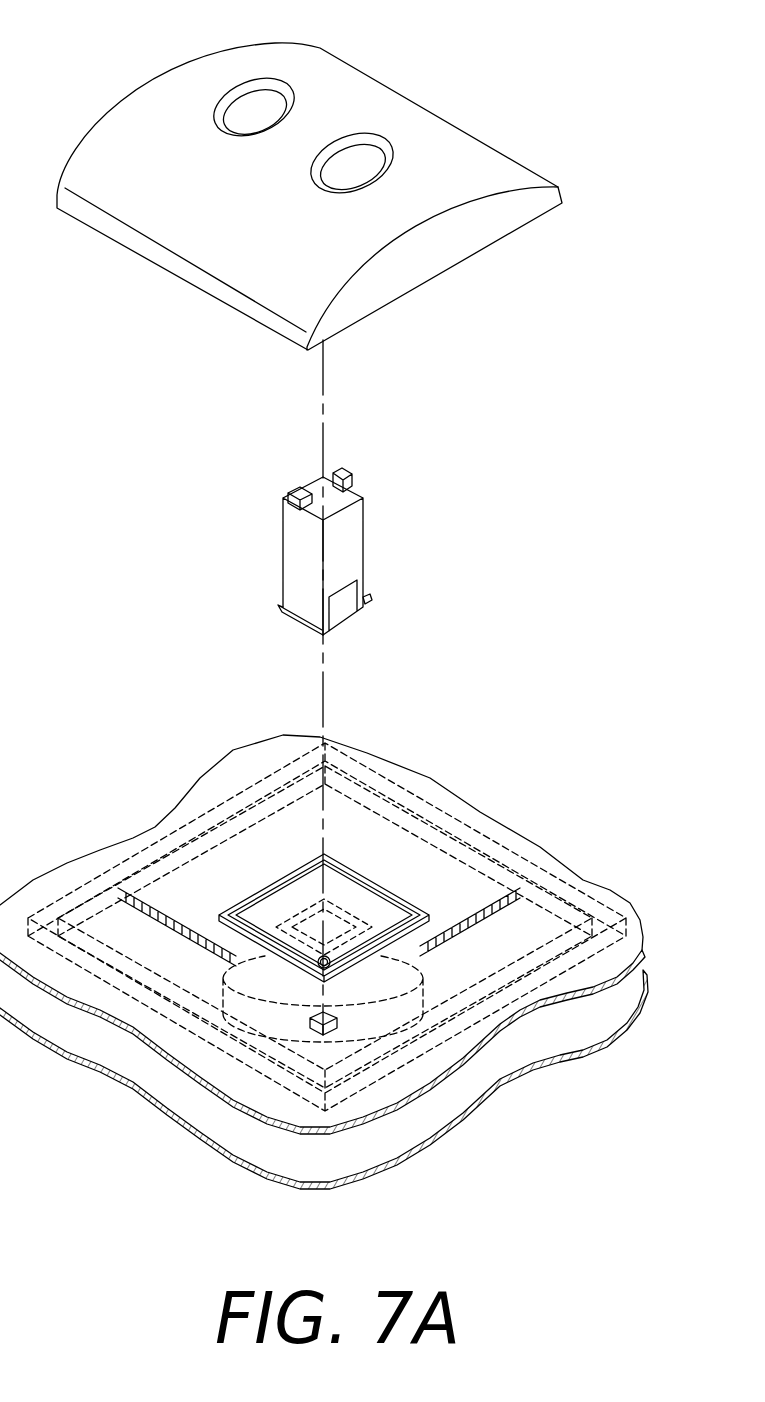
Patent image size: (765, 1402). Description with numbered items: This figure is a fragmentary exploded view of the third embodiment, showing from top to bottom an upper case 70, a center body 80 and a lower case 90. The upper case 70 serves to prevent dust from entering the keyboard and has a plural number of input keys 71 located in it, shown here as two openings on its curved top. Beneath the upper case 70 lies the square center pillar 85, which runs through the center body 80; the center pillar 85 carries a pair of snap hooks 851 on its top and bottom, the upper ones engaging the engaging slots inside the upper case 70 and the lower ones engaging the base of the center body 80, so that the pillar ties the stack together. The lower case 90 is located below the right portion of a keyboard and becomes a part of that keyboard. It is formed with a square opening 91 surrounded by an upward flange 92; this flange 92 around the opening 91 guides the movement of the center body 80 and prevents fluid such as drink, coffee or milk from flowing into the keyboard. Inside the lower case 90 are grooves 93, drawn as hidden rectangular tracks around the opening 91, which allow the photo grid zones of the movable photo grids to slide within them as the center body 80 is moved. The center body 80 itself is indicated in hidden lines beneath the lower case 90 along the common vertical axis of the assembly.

The upper case 70 is at (393, 110).
The input keys 71 is at (257, 100).
The center pillar 85 is at (355, 542).
The snap hooks 851 is at (293, 497).
The center body 80 is at (228, 995).
The lower case 90 is at (408, 1077).
The square opening 91 is at (347, 893).
The upward flange 92 is at (392, 890).
The grooves 93 is at (207, 830).